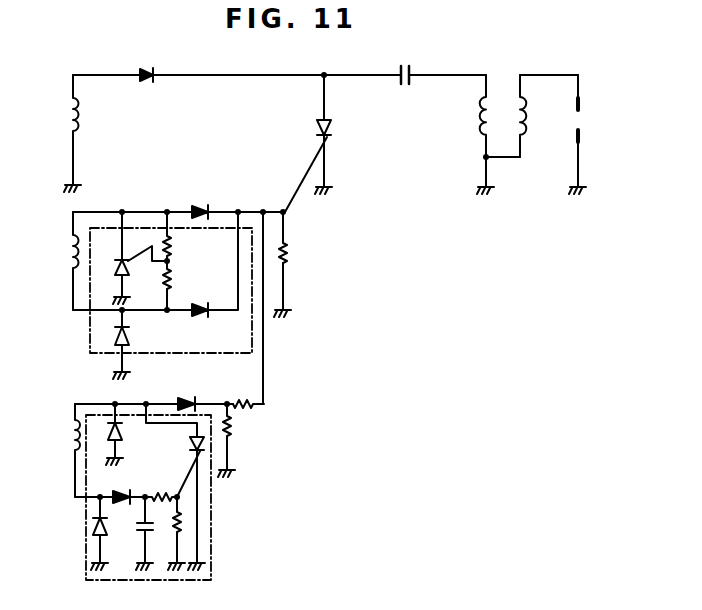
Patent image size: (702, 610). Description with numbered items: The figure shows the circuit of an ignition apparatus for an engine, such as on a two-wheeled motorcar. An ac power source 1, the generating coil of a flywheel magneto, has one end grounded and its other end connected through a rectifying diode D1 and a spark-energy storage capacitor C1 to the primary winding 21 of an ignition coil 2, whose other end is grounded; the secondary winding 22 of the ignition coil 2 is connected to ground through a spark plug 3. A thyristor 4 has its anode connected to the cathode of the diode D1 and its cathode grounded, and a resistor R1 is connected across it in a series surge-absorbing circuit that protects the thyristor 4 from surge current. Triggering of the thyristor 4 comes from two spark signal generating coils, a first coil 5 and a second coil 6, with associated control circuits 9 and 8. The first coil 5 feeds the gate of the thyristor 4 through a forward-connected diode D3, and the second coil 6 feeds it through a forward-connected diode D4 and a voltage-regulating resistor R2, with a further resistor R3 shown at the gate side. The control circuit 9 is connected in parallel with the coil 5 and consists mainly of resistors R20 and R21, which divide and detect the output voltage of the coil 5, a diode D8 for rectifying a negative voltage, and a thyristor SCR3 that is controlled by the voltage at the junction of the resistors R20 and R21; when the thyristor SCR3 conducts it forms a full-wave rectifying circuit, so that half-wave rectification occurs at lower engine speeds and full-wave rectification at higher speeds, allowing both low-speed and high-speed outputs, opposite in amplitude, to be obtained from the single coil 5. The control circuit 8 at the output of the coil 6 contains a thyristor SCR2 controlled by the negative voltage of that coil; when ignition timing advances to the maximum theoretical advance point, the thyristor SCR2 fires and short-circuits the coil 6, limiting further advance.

The ac power source 1 is at (63, 117).
The ignition coil 2 is at (508, 117).
The primary winding 21 is at (481, 119).
The secondary winding 22 is at (527, 118).
The spark plug 3 is at (583, 121).
The thyristor 4 is at (312, 128).
The first spark signal generating coil 5 is at (62, 250).
The second spark signal generating coil 6 is at (62, 434).
The control circuit 8 is at (131, 473).
The control circuit 9 is at (158, 275).
The rectifying diode D1 is at (153, 66).
The capacitor C1 is at (405, 66).
The forward-connected diode D3 is at (202, 206).
The diode D8 is at (202, 317).
The forward-connected diode D4 is at (186, 399).
The resistor R1 is at (289, 257).
The voltage-regulating resistor R2 is at (241, 401).
The resistor R3 is at (233, 425).
The resistor R20 is at (188, 236).
The resistor R21 is at (188, 285).
The thyristor SCR3 is at (118, 258).
The thyristor SCR2 is at (189, 447).